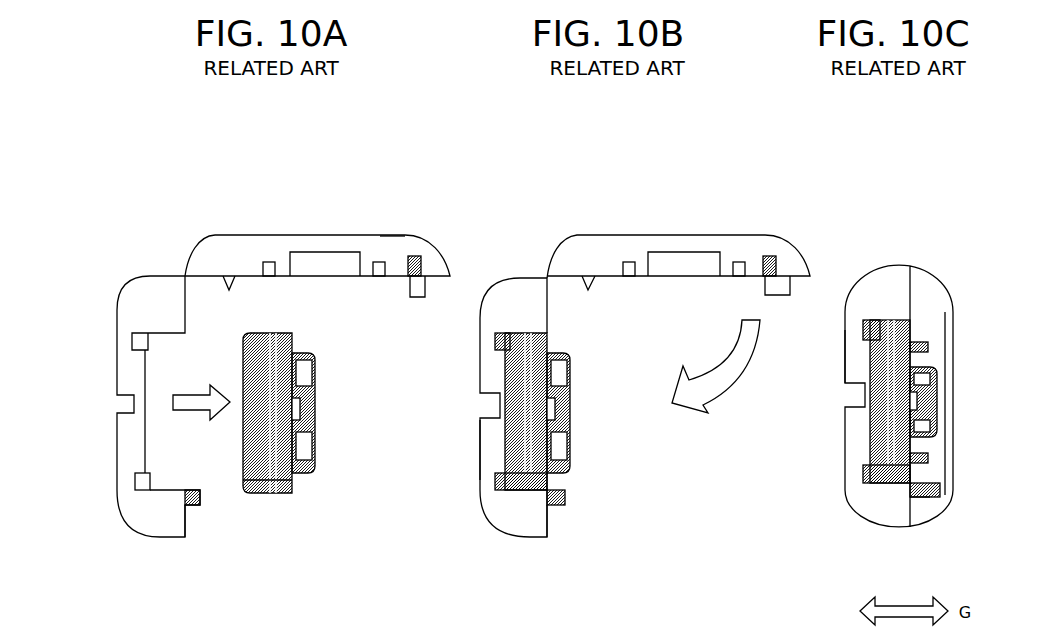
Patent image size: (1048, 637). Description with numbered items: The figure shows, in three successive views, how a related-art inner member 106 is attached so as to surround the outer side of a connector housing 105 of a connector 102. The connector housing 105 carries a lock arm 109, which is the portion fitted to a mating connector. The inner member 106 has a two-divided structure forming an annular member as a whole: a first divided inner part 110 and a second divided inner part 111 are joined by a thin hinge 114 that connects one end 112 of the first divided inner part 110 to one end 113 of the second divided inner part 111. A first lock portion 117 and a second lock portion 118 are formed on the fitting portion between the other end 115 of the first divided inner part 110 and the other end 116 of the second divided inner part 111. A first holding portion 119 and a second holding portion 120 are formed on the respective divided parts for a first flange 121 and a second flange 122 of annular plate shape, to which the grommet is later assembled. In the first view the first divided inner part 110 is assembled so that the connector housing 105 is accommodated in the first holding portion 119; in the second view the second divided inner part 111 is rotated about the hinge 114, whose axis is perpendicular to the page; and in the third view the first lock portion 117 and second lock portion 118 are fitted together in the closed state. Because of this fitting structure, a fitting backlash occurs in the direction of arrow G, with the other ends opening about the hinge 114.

In FIG. 10A, the connector 102 is at (105, 175).
In FIG. 10B, the connector 102 is at (545, 175).
In FIG. 10C, the connector 102 is at (865, 195).
In FIG. 10A, the connector housing 105 is at (280, 495).
In FIG. 10B, the connector housing 105 is at (550, 478).
In FIG. 10C, the connector housing 105 is at (915, 475).
In FIG. 10A, the inner member 106 is at (137, 285).
In FIG. 10B, the inner member 106 is at (497, 285).
In FIG. 10C, the inner member 106 is at (862, 275).
In FIG. 10A, the lock arm 109 is at (315, 405).
In FIG. 10B, the lock arm 109 is at (570, 410).
In FIG. 10C, the lock arm 109 is at (940, 400).
In FIG. 10A, the first divided inner part 110 is at (145, 450).
In FIG. 10B, the first divided inner part 110 is at (480, 442).
In FIG. 10C, the first divided inner part 110 is at (845, 368).
In FIG. 10A, the second divided inner part 111 is at (340, 236).
In FIG. 10B, the second divided inner part 111 is at (700, 236).
In FIG. 10C, the second divided inner part 111 is at (945, 315).
In FIG. 10A, the one end of the first divided inner part 112 is at (117, 300).
In FIG. 10A, the one end of the second divided inner part 113 is at (212, 238).
In FIG. 10A, the hinge 114 is at (185, 276).
In FIG. 10B, the hinge 114 is at (547, 277).
In FIG. 10C, the hinge 114 is at (913, 266).
In FIG. 10A, the other end of the first divided inner part 115 is at (155, 537).
In FIG. 10A, the other end of the second divided inner part 116 is at (418, 257).
In FIG. 10A, the first lock portion 117 is at (205, 505).
In FIG. 10B, the first lock portion 117 is at (565, 502).
In FIG. 10C, the first lock portion 117 is at (922, 510).
In FIG. 10A, the second lock portion 118 is at (400, 277).
In FIG. 10B, the second lock portion 118 is at (760, 277).
In FIG. 10C, the second lock portion 118 is at (935, 492).
In FIG. 10A, the first holding portion 119 is at (148, 365).
In FIG. 10A, the second holding portion 120 is at (325, 253).
In FIG. 10B, the second holding portion 120 is at (680, 277).
In FIG. 10A, the first flange 121 is at (118, 475).
In FIG. 10A, the second flange 122 is at (383, 235).